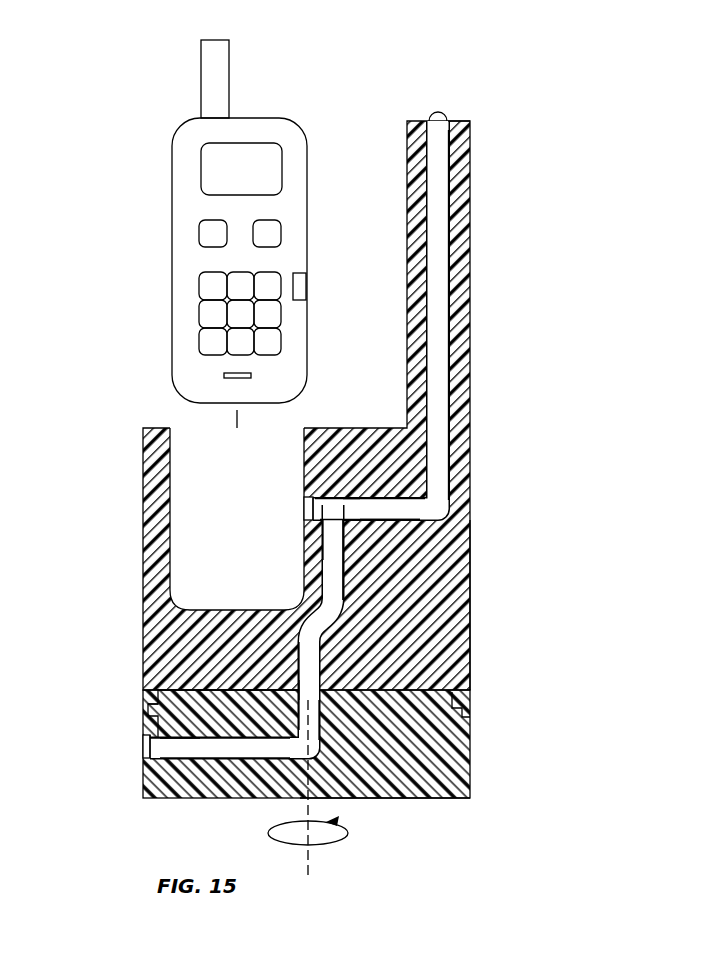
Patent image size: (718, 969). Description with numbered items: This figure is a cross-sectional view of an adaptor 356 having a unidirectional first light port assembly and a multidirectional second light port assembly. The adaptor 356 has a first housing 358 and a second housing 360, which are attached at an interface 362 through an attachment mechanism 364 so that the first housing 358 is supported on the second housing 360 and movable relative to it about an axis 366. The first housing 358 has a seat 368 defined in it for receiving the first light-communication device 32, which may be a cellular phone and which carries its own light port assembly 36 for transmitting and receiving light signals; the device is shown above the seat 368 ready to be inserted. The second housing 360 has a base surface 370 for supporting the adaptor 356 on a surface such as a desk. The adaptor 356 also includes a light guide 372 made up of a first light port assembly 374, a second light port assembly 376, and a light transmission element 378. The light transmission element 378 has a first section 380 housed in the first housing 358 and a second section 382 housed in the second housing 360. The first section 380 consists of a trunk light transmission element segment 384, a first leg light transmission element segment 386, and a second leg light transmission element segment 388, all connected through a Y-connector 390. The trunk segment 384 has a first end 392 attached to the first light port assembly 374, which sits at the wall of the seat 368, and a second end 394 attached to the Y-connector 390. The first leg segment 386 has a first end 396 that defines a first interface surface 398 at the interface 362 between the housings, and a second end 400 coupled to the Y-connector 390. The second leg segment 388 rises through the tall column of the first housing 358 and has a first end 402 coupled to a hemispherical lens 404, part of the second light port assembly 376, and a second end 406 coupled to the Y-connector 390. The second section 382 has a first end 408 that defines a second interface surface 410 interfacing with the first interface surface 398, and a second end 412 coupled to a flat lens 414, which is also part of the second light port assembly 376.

The first light-communication device 32 is at (295, 192).
The light port assembly 36 is at (303, 287).
The adaptor 356 is at (365, 482).
The first housing 358 is at (150, 545).
The second housing 360 is at (180, 798).
The interface 362 is at (195, 690).
The attachment mechanism 364 is at (131, 697).
The axis 366 is at (312, 868).
The seat 368 is at (237, 519).
The base surface 370 is at (397, 798).
The light guide 372 is at (339, 567).
The first light port assembly 374 is at (302, 508).
The second light port assembly 376 is at (456, 118).
The light transmission element 378 is at (440, 470).
The first section 380 is at (430, 505).
The second section 382 is at (245, 750).
The trunk light transmission element segment 384 is at (318, 510).
The first leg light transmission element segment 386 is at (330, 610).
The second leg light transmission element segment 388 is at (437, 278).
The Y-connector 390 is at (380, 512).
The first end of trunk segment 392 is at (331, 518).
The second end of trunk segment 394 is at (347, 497).
The first end of first leg segment 396 is at (323, 655).
The first interface surface 398 is at (322, 688).
The second end of first leg segment 400 is at (338, 528).
The first end of second leg segment 402 is at (476, 140).
The hemispherical lens 404 is at (441, 113).
The second end of second leg segment 406 is at (386, 519).
The first end of second section 408 is at (318, 745).
The second interface surface 410 is at (315, 708).
The second end of second section 412 is at (166, 748).
The flat lens 414 is at (143, 740).